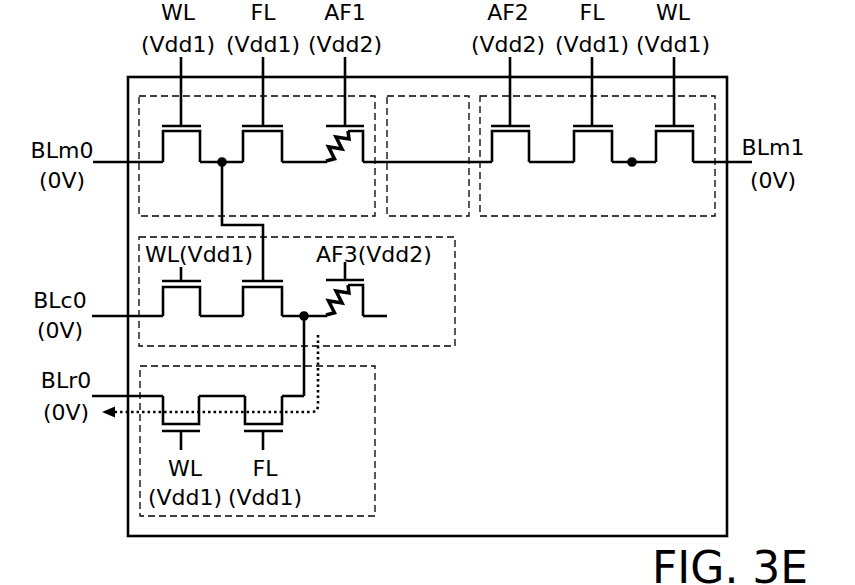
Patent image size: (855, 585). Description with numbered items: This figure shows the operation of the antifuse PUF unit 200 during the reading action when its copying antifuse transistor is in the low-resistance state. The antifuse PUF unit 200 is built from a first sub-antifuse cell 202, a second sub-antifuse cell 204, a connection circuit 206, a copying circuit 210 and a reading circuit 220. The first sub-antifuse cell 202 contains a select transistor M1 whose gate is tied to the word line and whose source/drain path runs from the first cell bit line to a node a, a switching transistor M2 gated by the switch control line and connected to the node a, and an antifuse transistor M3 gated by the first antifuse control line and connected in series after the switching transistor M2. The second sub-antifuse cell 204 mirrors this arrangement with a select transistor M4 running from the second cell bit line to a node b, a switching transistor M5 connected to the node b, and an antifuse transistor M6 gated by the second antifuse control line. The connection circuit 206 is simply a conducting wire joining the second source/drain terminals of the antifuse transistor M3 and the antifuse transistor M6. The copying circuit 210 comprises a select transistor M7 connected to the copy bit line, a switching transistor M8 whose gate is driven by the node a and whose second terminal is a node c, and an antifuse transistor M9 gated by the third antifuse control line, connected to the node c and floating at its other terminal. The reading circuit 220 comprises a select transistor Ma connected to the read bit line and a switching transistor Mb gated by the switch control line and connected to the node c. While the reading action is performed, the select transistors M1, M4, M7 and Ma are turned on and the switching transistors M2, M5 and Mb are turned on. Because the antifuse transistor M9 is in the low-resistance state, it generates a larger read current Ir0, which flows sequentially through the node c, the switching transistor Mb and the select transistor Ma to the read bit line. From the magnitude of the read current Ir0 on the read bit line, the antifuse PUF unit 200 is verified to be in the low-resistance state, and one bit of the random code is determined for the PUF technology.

The antifuse PUF unit 200 is at (659, 497).
The first sub-antifuse cell 202 is at (290, 207).
The second sub-antifuse cell 204 is at (532, 207).
The connection circuit 206 is at (408, 126).
The copying circuit 210 is at (400, 344).
The reading circuit 220 is at (325, 482).
The select transistor M1 is at (181, 123).
The switching transistor M2 is at (262, 123).
The antifuse transistor M3 is at (345, 123).
The select transistor M4 is at (674, 123).
The switching transistor M5 is at (593, 123).
The antifuse transistor M6 is at (510, 123).
The select transistor M7 is at (181, 306).
The switching transistor M8 is at (262, 313).
The antifuse transistor M9 is at (345, 301).
The select transistor Ma is at (181, 410).
The switching transistor Mb is at (263, 410).
The node a is at (239, 205).
The node b is at (632, 149).
The node c is at (304, 341).
The read current Ir0 is at (228, 380).